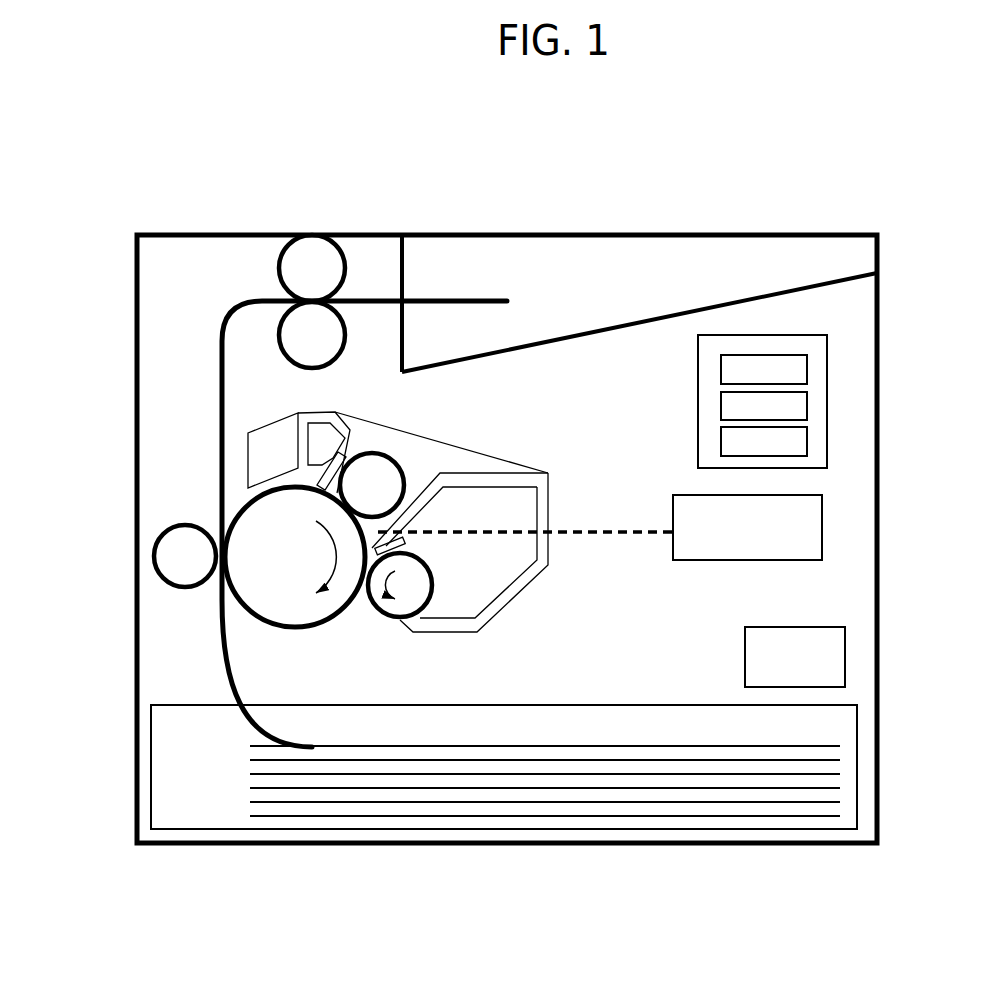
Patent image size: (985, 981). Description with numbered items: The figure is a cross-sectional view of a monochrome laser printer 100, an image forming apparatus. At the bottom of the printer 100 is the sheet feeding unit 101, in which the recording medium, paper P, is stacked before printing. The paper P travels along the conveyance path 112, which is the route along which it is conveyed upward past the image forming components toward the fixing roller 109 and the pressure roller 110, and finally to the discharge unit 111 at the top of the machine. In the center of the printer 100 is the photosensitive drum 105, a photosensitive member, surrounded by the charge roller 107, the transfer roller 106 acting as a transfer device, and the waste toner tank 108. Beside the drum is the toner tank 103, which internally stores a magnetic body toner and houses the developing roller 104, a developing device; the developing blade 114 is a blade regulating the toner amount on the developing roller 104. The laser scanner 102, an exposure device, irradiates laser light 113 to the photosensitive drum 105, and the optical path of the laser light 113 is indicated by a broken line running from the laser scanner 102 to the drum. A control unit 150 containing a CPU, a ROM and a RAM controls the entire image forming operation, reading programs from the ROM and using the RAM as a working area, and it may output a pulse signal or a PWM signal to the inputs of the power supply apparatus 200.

The printer 100 is at (450, 208).
The sheet feeding unit 101 is at (860, 788).
The laser scanner 102 is at (825, 495).
The toner tank 103 is at (465, 585).
The developing roller 104 is at (405, 585).
The photosensitive drum 105 is at (283, 562).
The transfer roller 106 is at (182, 562).
The charge roller 107 is at (375, 490).
The waste toner tank 108 is at (316, 440).
The fixing roller 109 is at (305, 335).
The pressure roller 110 is at (315, 268).
The discharge unit 111 is at (567, 317).
The conveyance path 112 is at (222, 655).
The laser light 113 is at (606, 530).
The developing blade 114 is at (410, 545).
The control unit 150 is at (830, 357).
The power supply apparatus 200 is at (848, 665).
The paper P is at (502, 745).